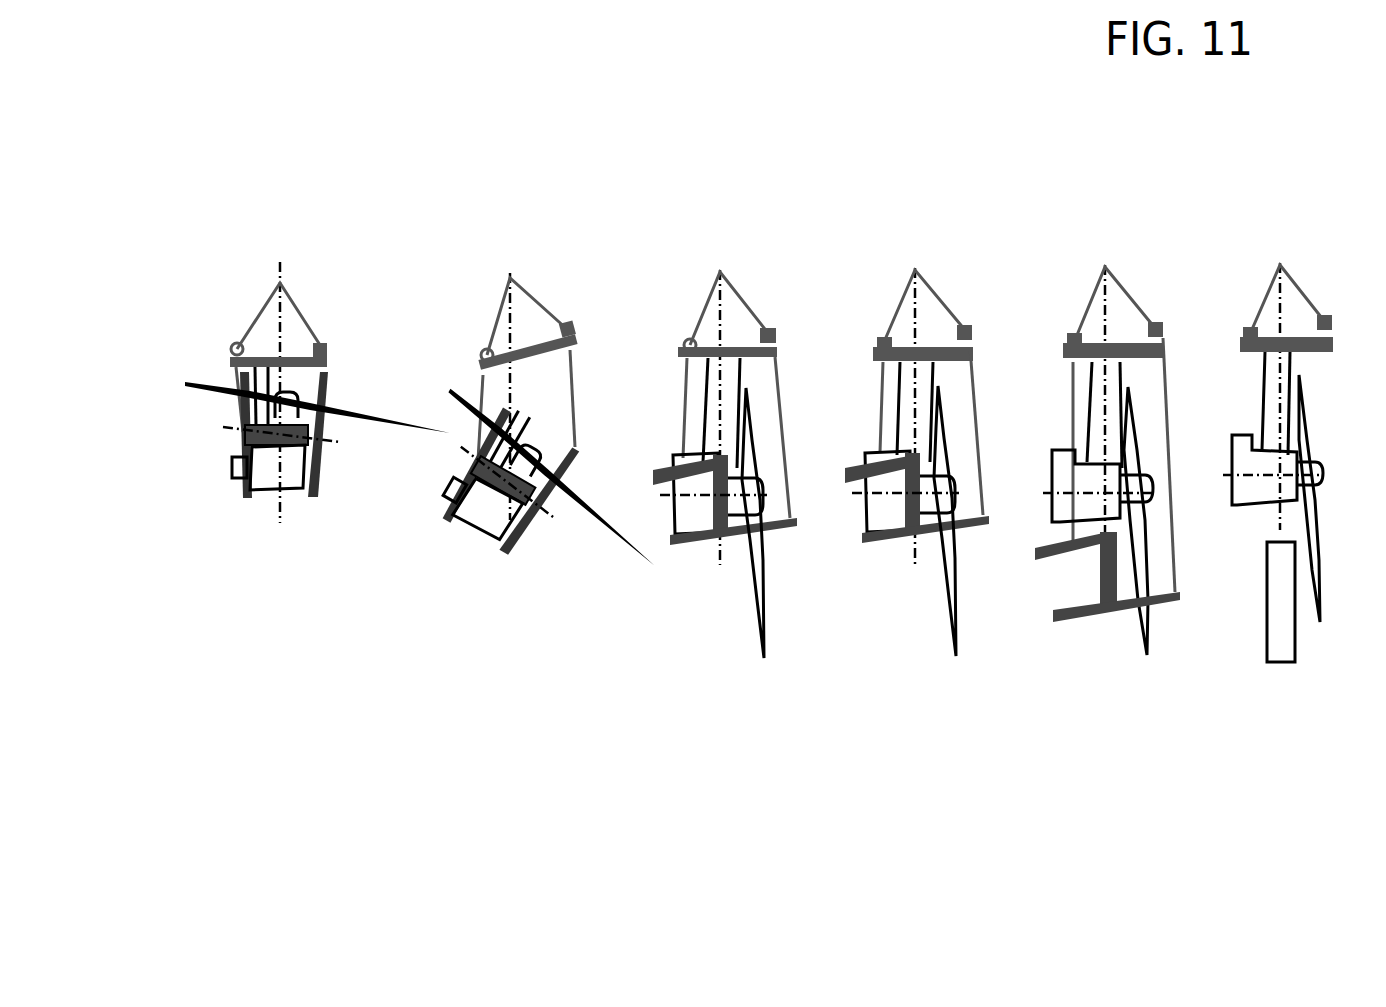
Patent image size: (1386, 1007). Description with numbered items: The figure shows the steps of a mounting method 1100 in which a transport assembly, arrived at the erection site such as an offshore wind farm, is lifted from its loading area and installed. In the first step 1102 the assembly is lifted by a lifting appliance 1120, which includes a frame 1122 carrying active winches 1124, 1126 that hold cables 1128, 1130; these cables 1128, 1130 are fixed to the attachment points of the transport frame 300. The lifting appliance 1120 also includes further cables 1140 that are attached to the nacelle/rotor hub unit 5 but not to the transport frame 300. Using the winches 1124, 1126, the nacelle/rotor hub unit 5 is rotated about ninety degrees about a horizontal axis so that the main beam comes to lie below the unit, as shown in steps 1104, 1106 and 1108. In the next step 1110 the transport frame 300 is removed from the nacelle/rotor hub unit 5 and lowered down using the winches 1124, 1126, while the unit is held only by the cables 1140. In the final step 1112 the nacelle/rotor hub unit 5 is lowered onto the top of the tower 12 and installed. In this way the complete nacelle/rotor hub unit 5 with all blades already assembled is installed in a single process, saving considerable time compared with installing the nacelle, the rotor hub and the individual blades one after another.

The mounting method 1100 is at (338, 90).
The method step 1102 is at (322, 860).
The method step 1104 is at (527, 860).
The method step 1106 is at (749, 860).
The method step 1108 is at (939, 860).
The method step 1110 is at (1127, 856).
The method step 1112 is at (1319, 860).
The lifting appliance 1120 is at (293, 312).
The frame 1122 is at (230, 364).
The active winch 1124 is at (233, 350).
The active winch 1126 is at (327, 350).
The cable 1128 is at (490, 396).
The cable 1130 is at (573, 397).
The cable 1140 is at (243, 403).
The nacelle/rotor hub unit 5 is at (233, 477).
The transport frame 300 is at (320, 492).
The tower 12 is at (1295, 642).